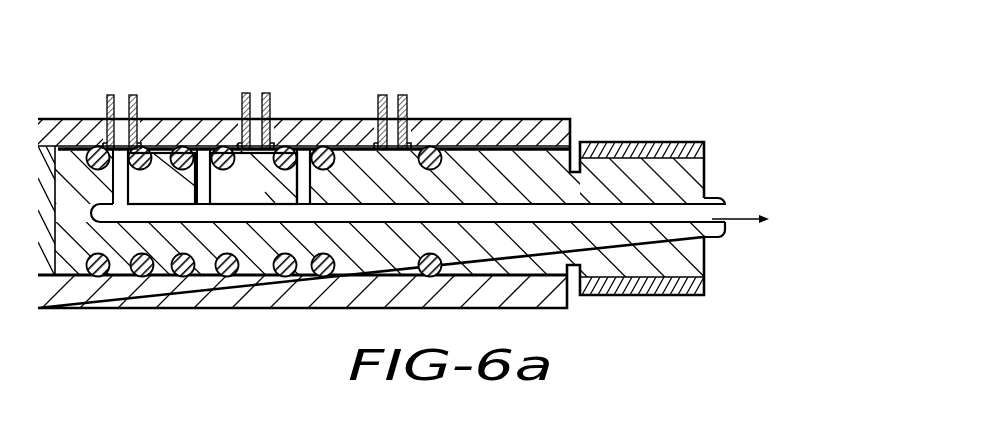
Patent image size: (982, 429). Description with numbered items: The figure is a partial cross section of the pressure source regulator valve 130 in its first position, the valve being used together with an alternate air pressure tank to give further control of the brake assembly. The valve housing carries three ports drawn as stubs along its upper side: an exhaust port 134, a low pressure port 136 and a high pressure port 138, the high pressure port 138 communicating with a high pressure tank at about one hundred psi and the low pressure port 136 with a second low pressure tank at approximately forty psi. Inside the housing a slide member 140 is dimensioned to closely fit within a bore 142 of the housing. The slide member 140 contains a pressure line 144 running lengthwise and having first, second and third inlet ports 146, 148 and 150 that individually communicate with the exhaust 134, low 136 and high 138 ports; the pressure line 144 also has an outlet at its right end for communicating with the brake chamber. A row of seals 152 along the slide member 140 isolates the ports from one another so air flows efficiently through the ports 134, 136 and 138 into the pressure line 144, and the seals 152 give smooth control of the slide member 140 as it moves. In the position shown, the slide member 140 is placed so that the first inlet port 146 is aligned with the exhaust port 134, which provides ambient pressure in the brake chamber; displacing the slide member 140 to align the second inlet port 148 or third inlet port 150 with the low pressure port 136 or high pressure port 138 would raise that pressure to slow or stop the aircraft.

The pressure source regulator valve 130 is at (595, 88).
The exhaust port 134 is at (121, 96).
The low pressure port 136 is at (255, 96).
The high pressure port 138 is at (393, 96).
The slide member 140 is at (543, 306).
The bore 142 is at (74, 147).
The pressure line 144 is at (492, 222).
The first inlet port 146 is at (125, 181).
The second inlet port 148 is at (210, 181).
The third inlet port 150 is at (312, 182).
The seals 152 is at (105, 277).